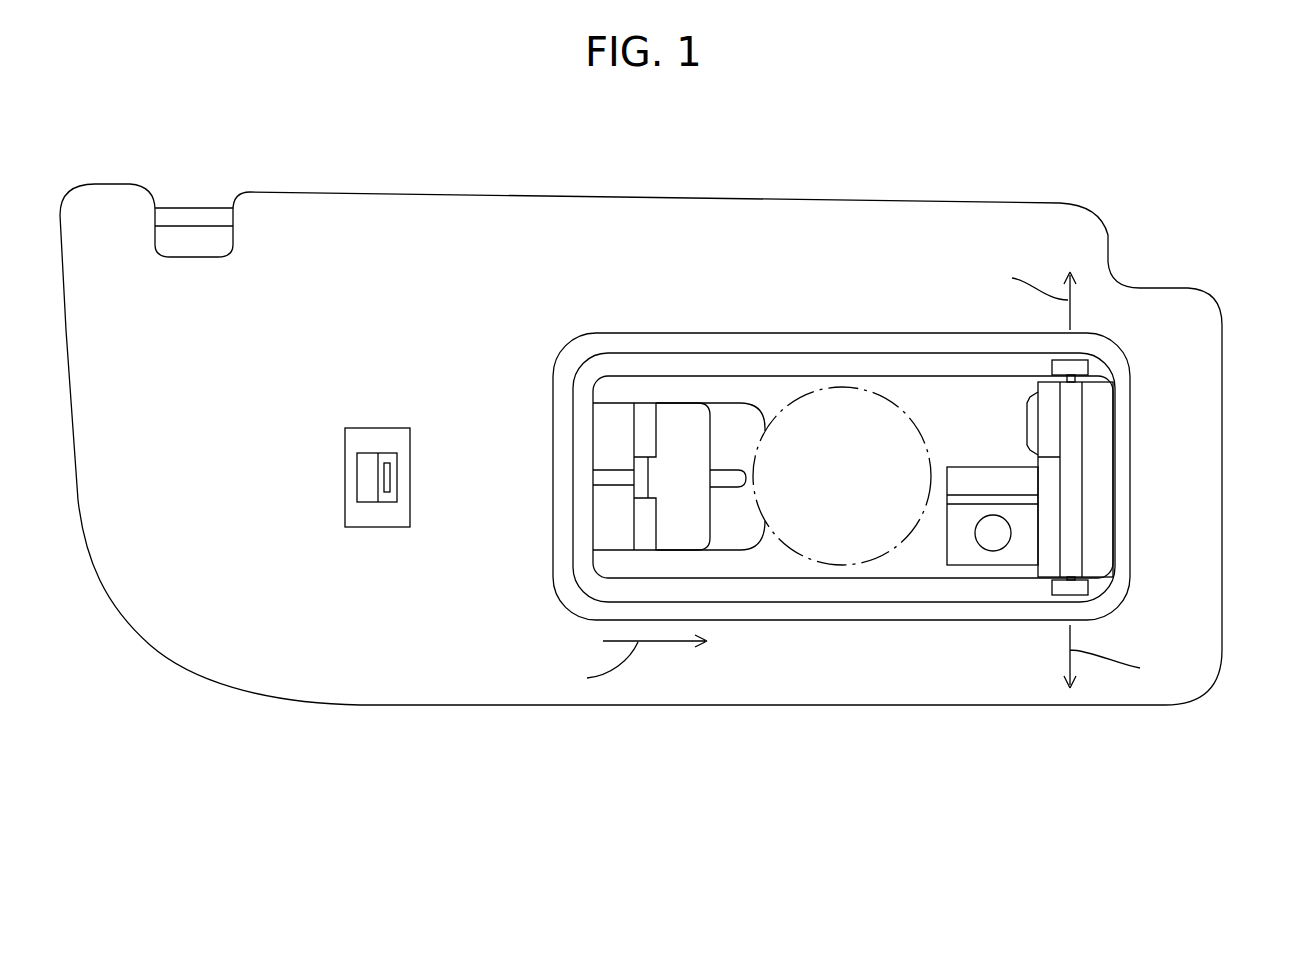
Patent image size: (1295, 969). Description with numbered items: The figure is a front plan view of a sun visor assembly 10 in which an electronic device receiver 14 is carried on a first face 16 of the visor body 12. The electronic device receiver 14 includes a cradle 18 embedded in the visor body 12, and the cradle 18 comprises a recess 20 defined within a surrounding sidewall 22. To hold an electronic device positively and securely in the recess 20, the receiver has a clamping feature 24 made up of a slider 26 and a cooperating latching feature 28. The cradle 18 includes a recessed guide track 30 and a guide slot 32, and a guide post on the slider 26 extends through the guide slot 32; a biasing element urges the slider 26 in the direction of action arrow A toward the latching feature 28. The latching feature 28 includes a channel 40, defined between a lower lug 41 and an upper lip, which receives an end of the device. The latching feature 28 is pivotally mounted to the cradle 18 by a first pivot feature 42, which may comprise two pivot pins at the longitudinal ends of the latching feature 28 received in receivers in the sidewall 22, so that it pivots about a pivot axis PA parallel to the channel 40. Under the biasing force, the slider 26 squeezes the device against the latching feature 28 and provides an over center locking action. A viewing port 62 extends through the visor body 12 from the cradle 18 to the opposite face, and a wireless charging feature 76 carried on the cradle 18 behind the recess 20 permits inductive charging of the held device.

The sun visor assembly 10 is at (970, 166).
The visor body 12 is at (204, 643).
The electronic device receiver 14 is at (719, 645).
The first face 16 is at (880, 668).
The cradle 18 is at (818, 352).
The recess 20 is at (918, 558).
The sidewall 22 is at (962, 354).
The clamping feature 24 is at (617, 541).
The slider 26 is at (685, 437).
The latching feature 28 is at (1081, 425).
The recessed guide track 30 is at (613, 422).
The guide slot 32 is at (615, 478).
The channel 40 is at (1030, 423).
The lower lug 41 is at (1027, 405).
The first pivot feature 42 is at (1082, 380).
The viewing port 62 is at (1012, 539).
The wireless charging feature 76 is at (822, 566).